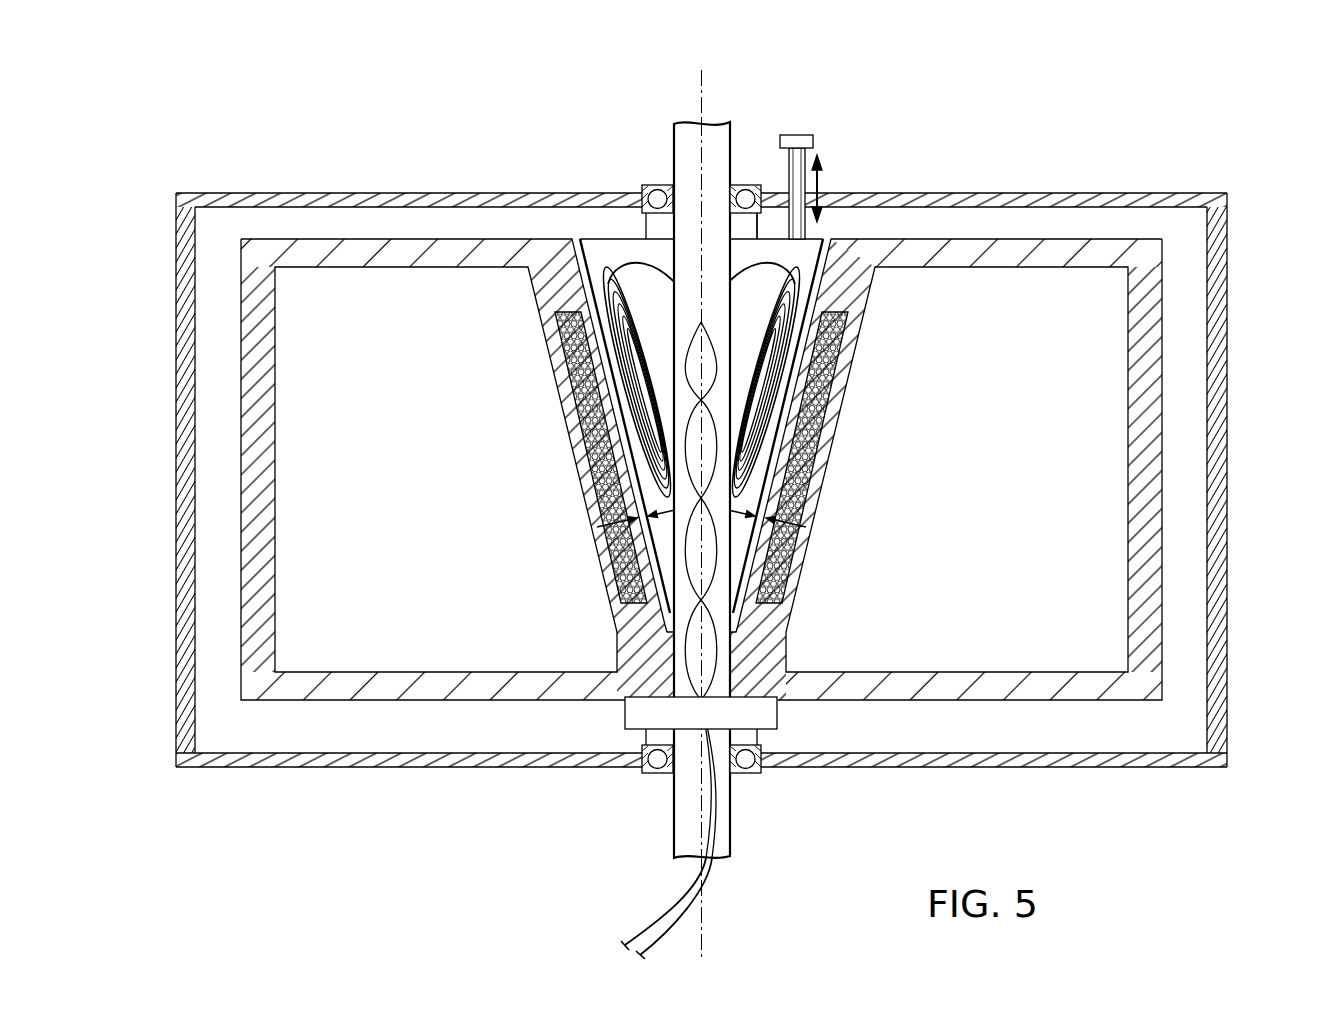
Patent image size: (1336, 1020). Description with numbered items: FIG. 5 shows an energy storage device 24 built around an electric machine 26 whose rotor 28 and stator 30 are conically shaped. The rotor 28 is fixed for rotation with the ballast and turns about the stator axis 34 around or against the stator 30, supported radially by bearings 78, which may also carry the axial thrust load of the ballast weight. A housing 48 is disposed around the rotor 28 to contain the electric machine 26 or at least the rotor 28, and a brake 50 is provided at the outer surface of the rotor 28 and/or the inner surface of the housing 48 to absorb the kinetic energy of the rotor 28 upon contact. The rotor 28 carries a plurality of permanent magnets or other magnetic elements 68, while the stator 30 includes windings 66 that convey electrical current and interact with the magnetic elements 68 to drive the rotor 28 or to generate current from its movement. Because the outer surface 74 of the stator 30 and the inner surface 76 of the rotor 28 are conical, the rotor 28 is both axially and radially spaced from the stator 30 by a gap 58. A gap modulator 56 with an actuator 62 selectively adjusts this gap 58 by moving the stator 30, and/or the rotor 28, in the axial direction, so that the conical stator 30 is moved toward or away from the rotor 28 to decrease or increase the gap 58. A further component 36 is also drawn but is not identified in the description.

The energy storage device 24 is at (403, 95).
The electric machine 26 is at (386, 744).
The rotor 28 is at (701, 469).
The stator 30 is at (625, 553).
The stator axis 34 is at (703, 945).
The collar 36 is at (767, 715).
The housing 48 is at (701, 480).
The brake 50 is at (241, 370).
The gap modulator 56 is at (826, 148).
The gap 58 is at (597, 527).
The actuator 62 is at (784, 140).
The windings 66 is at (640, 480).
The magnetic elements 68 is at (565, 382).
The outer surface 74 is at (818, 292).
The inner surface 76 is at (701, 362).
The bearings 78 is at (647, 184).